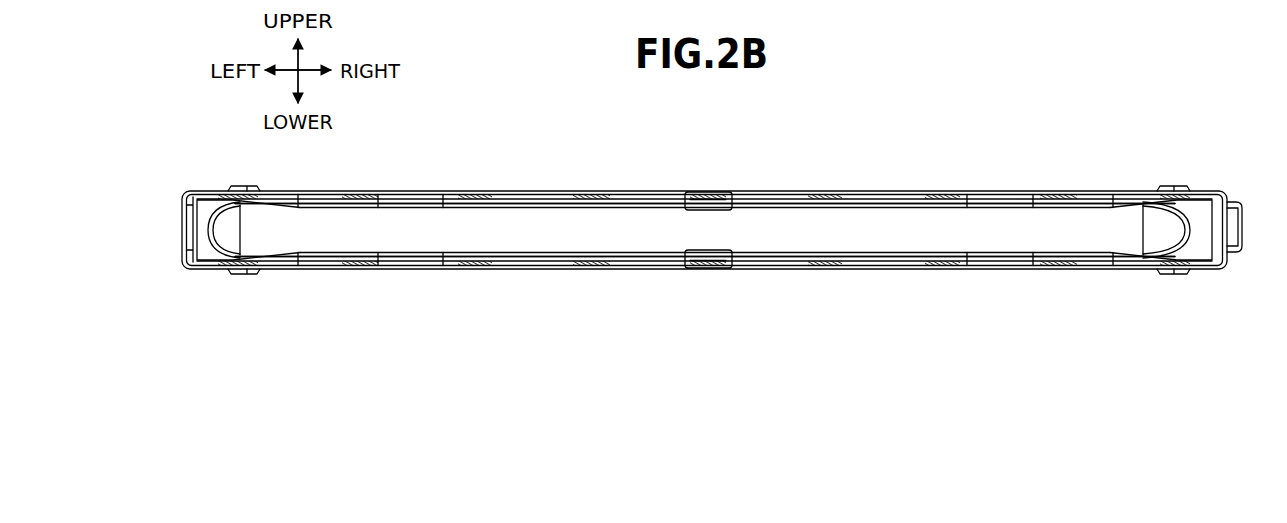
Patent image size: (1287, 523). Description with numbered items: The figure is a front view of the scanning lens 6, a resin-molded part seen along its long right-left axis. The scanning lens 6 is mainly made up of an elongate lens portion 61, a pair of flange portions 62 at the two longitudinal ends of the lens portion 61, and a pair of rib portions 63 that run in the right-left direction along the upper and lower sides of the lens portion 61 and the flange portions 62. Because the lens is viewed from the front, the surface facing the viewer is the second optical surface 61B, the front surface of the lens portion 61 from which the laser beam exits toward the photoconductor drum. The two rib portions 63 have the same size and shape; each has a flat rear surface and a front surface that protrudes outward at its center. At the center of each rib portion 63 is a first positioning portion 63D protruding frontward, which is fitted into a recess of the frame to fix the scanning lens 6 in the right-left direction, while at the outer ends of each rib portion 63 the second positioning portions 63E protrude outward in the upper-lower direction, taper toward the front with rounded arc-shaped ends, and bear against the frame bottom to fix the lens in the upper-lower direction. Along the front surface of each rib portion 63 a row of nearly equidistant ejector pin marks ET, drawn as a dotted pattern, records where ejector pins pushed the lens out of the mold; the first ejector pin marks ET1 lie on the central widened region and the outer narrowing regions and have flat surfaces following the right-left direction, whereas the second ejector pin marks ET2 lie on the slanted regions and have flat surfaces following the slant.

The scanning lens 6 is at (979, 141).
The lens portion 61 is at (773, 232).
The second optical surface 61B is at (704, 230).
The flange portion 62 is at (192, 191).
The rib portion 63 is at (544, 189).
The first positioning portion 63D is at (715, 192).
The second positioning portion 63E is at (245, 187).
The ejector pin mark ET is at (669, 233).
The first ejector pin mark ET1 is at (597, 191).
The second ejector pin mark ET2 is at (366, 191).